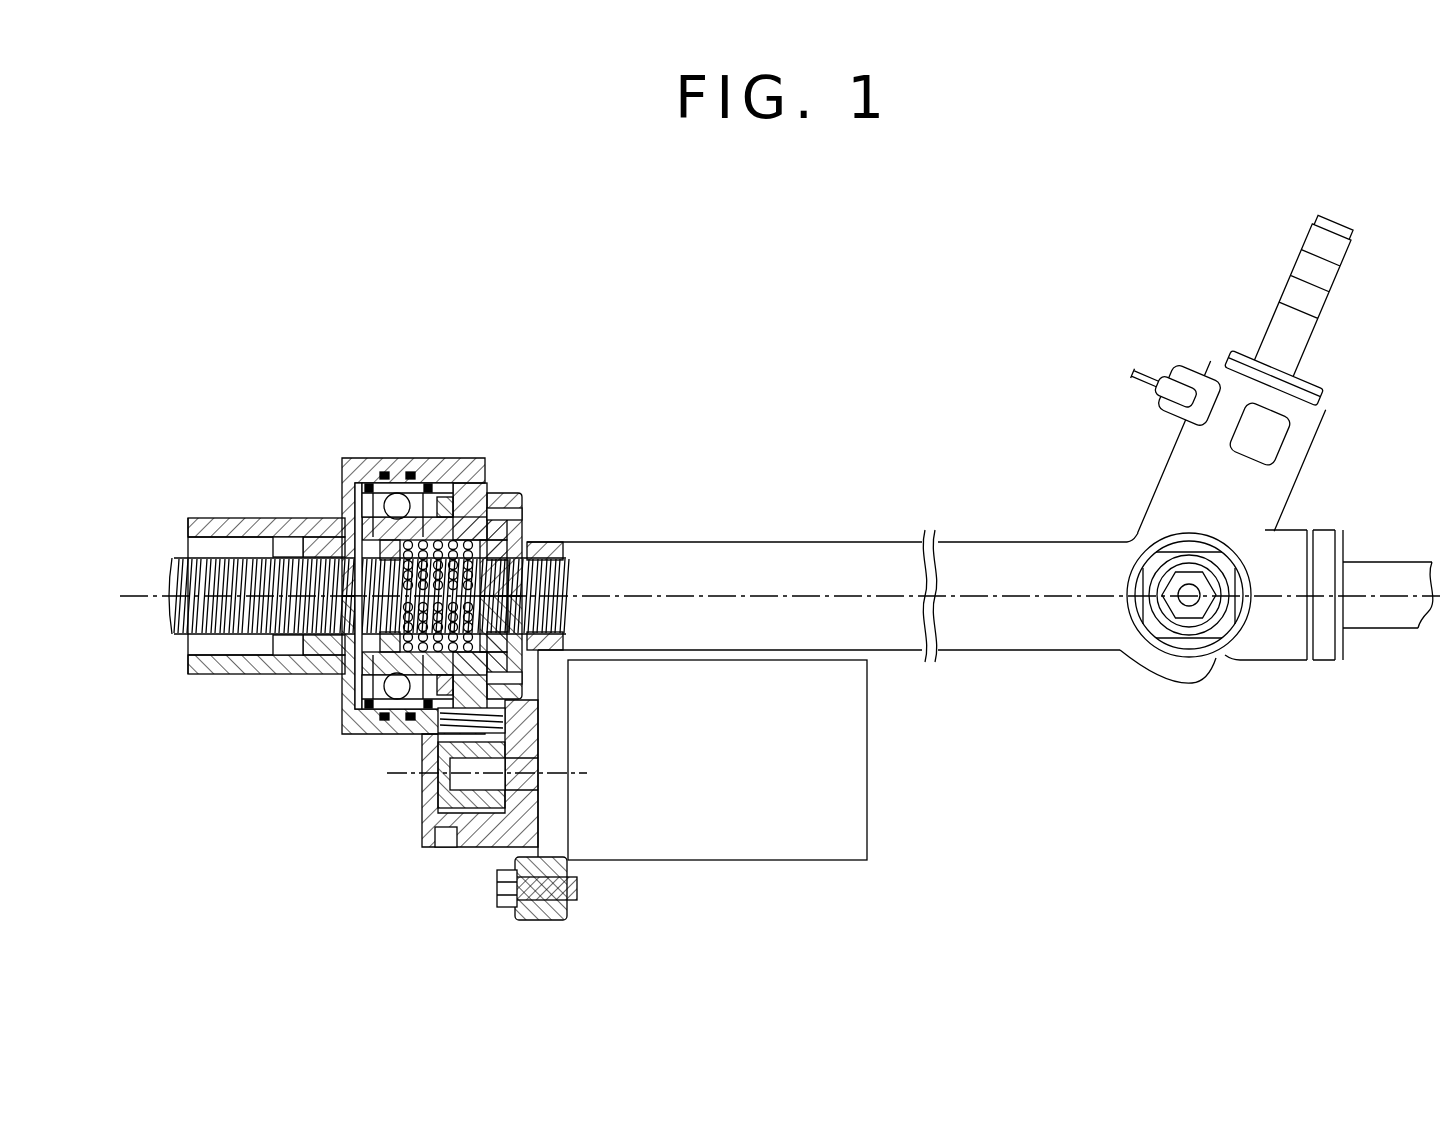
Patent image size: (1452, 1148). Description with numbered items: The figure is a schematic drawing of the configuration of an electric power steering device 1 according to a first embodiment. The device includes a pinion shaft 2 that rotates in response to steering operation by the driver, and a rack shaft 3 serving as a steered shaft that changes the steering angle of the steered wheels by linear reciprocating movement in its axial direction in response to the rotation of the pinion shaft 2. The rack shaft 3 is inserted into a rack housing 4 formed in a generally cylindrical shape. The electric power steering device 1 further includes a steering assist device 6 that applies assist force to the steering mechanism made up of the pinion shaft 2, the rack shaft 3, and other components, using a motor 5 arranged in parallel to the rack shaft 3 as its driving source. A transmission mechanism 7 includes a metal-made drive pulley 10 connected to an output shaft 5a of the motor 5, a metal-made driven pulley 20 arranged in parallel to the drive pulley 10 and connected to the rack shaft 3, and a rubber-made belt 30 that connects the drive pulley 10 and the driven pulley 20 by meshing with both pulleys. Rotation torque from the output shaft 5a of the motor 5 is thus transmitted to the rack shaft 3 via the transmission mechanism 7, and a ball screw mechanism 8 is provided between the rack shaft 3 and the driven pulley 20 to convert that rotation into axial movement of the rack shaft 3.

The electric power steering device 1 is at (270, 306).
The pinion shaft 2 is at (1307, 257).
The rack shaft 3 is at (1388, 620).
The rack housing 4 is at (876, 535).
The motor 5 is at (742, 861).
The output shaft 5a is at (478, 800).
The steering assist device 6 is at (325, 861).
The transmission mechanism 7 is at (427, 802).
The ball screw mechanism 8 is at (522, 495).
The drive pulley 10 is at (440, 750).
The driven pulley 20 is at (483, 528).
The belt 30 is at (510, 720).